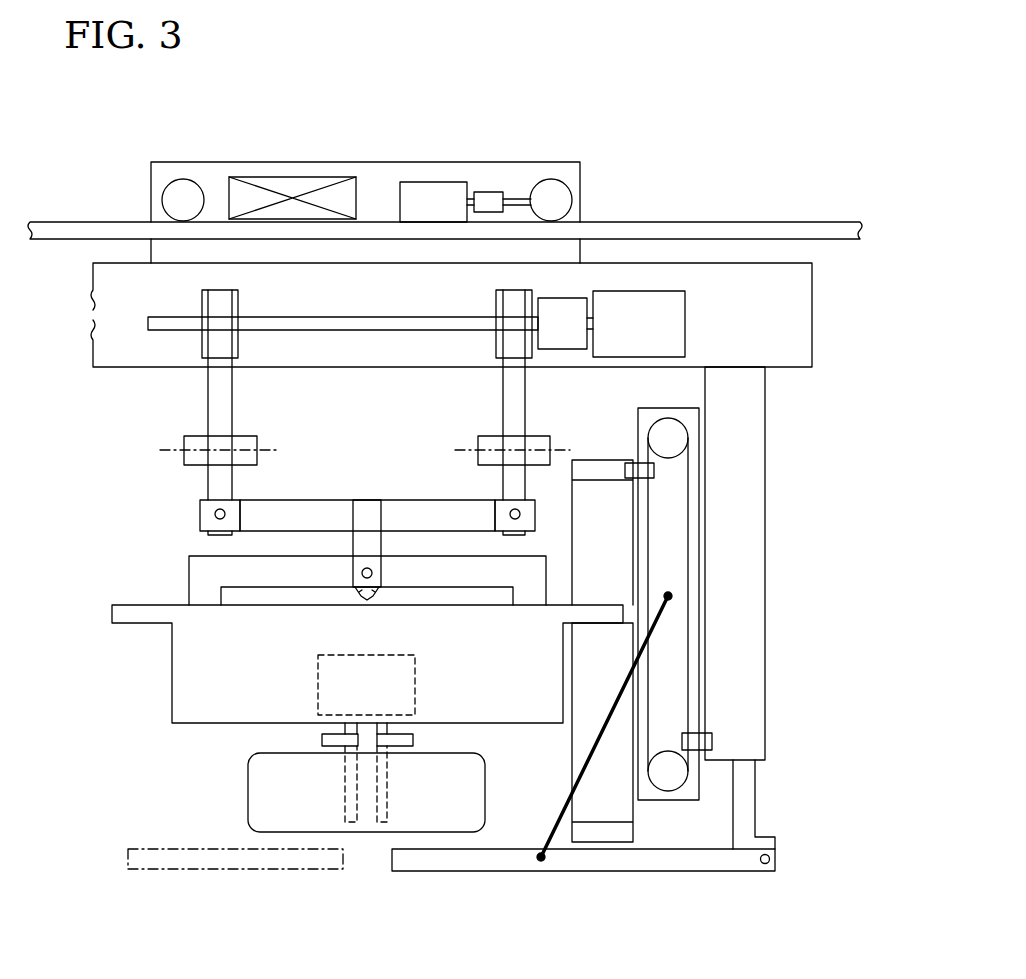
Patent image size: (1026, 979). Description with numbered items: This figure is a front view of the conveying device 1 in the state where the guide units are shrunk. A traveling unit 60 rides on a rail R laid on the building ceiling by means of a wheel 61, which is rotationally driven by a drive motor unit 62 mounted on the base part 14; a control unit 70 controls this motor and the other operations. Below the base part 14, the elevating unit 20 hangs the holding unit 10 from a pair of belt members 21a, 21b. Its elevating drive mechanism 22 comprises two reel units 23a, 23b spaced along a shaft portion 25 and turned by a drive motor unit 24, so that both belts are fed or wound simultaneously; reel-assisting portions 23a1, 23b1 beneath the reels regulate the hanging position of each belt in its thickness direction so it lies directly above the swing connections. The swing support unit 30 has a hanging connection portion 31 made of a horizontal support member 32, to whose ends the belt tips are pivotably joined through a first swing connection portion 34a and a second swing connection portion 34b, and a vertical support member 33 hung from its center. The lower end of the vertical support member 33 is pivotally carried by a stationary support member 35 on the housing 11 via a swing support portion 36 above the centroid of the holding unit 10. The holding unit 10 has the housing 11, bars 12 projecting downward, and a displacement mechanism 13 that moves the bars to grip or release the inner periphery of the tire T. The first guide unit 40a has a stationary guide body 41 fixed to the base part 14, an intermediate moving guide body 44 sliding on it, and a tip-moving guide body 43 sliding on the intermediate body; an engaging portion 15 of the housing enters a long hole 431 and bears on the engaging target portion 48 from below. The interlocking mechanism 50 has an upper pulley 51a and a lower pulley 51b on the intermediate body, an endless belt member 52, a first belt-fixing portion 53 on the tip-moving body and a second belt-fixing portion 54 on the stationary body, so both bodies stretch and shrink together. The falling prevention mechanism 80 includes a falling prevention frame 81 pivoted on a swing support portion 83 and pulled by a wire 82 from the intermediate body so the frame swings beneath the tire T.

The conveying device 1 is at (815, 105).
The rail R is at (806, 222).
The tire T is at (265, 810).
The holding unit 10 is at (140, 690).
The housing 11 is at (230, 712).
The bars 12 is at (316, 800).
The displacement mechanism 13 is at (318, 690).
The base part 14 is at (812, 305).
The engaging portion 15 is at (600, 630).
The elevating unit 20 is at (128, 312).
The belt member 21a is at (232, 390).
The belt member 21b is at (503, 395).
The elevating drive mechanism 22 is at (695, 318).
The reel unit 23a is at (238, 300).
The reel unit 23b is at (496, 300).
The reel-assisting portion 23a1 is at (190, 445).
The reel-assisting portion 23b1 is at (478, 445).
The drive motor unit 24 is at (685, 330).
The shaft portion 25 is at (370, 317).
The swing support unit 30 is at (160, 518).
The hanging connection portion 31 is at (420, 432).
The horizontal support member 32 is at (362, 500).
The vertical support member 33 is at (320, 500).
The first swing connection portion 34a is at (216, 510).
The second swing connection portion 34b is at (511, 510).
The stationary support member 35 is at (205, 598).
The swing support portion 36 is at (362, 573).
The first guide unit 40a is at (782, 425).
The stationary guide body 41 is at (750, 545).
The tip-moving guide body 43 is at (573, 748).
The intermediate moving guide body 44 is at (708, 660).
The long hole 431 is at (690, 510).
The engaging target portion 48 is at (615, 590).
The interlocking mechanism 50 is at (842, 480).
The upper pulley 51a is at (672, 440).
The lower pulley 51b is at (668, 790).
The endless belt member 52 is at (690, 478).
The first belt-fixing portion 53 is at (625, 470).
The second belt-fixing portion 54 is at (712, 740).
The traveling unit 60 is at (578, 140).
The wheel 61 is at (183, 179).
The drive motor unit 62 is at (440, 182).
The control unit 70 is at (300, 177).
The falling prevention mechanism 80 is at (780, 887).
The falling prevention frame 81 is at (185, 869).
The wire 82 is at (541, 857).
The swing support portion 83 is at (750, 800).